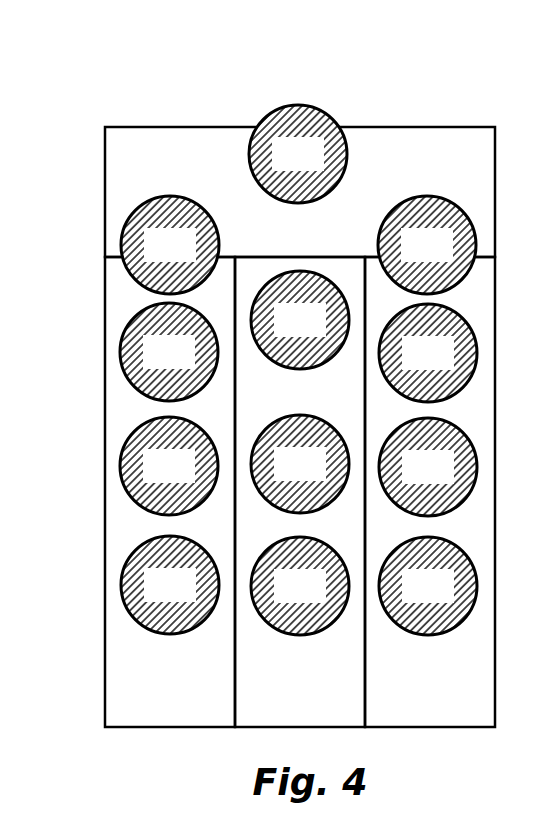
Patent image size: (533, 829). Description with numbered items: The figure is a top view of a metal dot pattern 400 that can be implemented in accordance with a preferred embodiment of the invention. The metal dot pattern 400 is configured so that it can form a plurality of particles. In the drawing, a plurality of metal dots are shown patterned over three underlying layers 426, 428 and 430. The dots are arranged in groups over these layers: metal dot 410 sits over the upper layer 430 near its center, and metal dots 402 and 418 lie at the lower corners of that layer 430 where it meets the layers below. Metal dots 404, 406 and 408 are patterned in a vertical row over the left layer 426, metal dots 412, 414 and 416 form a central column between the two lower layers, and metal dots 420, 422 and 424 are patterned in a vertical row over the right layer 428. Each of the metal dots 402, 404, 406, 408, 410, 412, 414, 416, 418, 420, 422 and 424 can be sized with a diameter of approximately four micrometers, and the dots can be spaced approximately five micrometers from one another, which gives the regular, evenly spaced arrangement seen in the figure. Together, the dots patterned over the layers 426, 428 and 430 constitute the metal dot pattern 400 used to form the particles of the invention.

The metal dot pattern 400 is at (95, 122).
The metal dot 402 is at (152, 258).
The metal dot 404 is at (151, 365).
The metal dot 406 is at (151, 479).
The metal dot 408 is at (152, 598).
The metal dot 410 is at (280, 167).
The metal dot 412 is at (282, 333).
The metal dot 414 is at (282, 477).
The metal dot 416 is at (282, 599).
The metal dot 418 is at (409, 258).
The metal dot 420 is at (410, 366).
The metal dot 422 is at (410, 480).
The metal dot 424 is at (410, 599).
The layer 426 is at (155, 689).
The layer 428 is at (413, 688).
The layer 430 is at (136, 165).